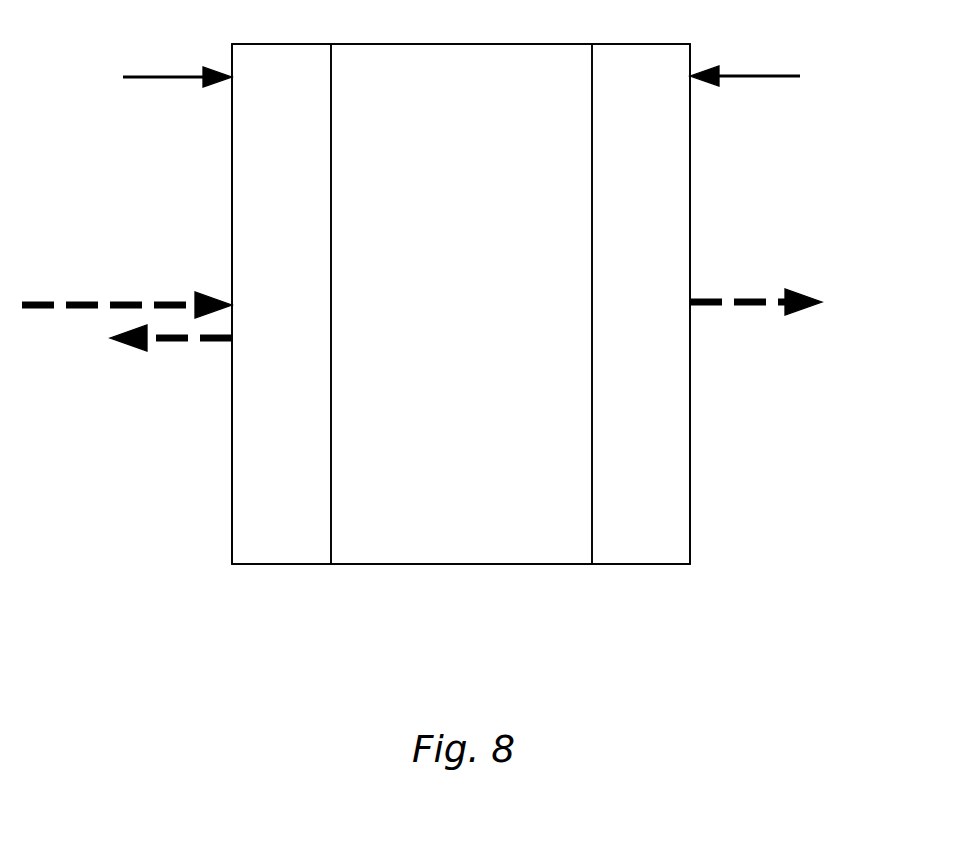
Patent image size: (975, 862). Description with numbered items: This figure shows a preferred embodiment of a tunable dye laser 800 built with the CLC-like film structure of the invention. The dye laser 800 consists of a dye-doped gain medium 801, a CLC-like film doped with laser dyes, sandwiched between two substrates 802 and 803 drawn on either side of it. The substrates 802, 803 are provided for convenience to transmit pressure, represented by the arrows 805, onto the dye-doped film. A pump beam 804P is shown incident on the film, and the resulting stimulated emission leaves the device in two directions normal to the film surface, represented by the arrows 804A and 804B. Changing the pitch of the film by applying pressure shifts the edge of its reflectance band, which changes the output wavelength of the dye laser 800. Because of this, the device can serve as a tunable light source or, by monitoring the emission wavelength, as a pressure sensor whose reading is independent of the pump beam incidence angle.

The dye laser 800 is at (228, 567).
The dye-doped gain medium 801 is at (461, 304).
The substrate 802 is at (281, 304).
The substrate 803 is at (641, 304).
The pump beam 804P is at (123, 284).
The stimulated emission 804B is at (151, 363).
The stimulated emission 804A is at (766, 327).
The pressure arrows 805 is at (457, 77).